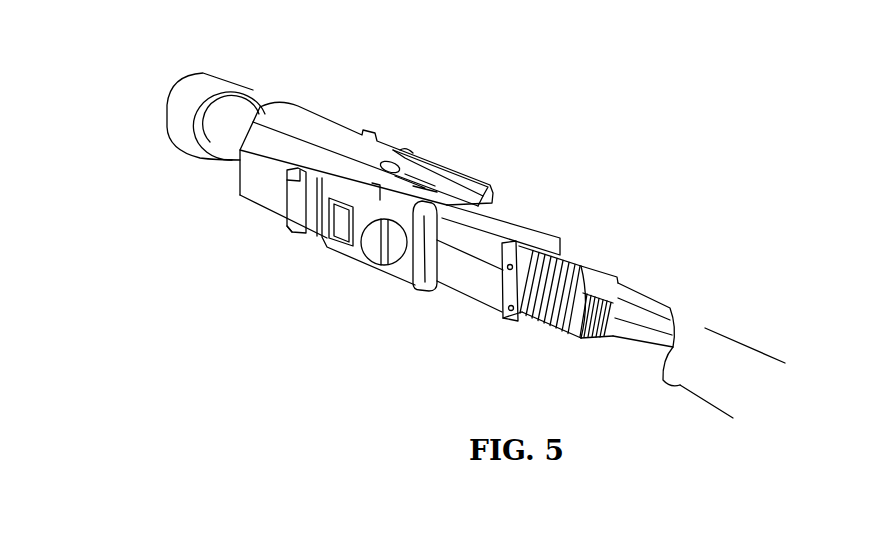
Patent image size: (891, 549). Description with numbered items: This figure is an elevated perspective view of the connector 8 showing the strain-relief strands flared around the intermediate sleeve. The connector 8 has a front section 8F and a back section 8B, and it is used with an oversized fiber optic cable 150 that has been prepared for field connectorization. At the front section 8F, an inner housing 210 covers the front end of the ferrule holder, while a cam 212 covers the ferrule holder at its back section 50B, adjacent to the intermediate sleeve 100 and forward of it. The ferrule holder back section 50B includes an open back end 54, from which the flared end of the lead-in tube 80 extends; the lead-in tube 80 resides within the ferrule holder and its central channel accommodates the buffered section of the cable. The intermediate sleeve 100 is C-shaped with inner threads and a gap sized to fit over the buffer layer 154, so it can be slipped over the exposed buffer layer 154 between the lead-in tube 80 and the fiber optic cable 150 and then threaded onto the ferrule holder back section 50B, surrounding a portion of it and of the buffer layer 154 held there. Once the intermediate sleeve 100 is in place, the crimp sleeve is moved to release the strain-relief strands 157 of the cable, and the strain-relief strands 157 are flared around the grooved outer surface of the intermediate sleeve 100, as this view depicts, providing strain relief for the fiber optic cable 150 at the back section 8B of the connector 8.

The connector 8 is at (504, 231).
The front section 8F is at (245, 222).
The back section 8B is at (509, 337).
The inner housing 210 is at (325, 128).
The cam 212 is at (512, 228).
The intermediate sleeve 100 is at (587, 248).
The lead-in tube 80 is at (627, 325).
The back section 50B is at (613, 290).
The open back end 54 is at (632, 307).
The strain-relief strands 157 is at (660, 342).
The buffer layer 154 is at (668, 342).
The fiber optic cable 150 is at (694, 384).